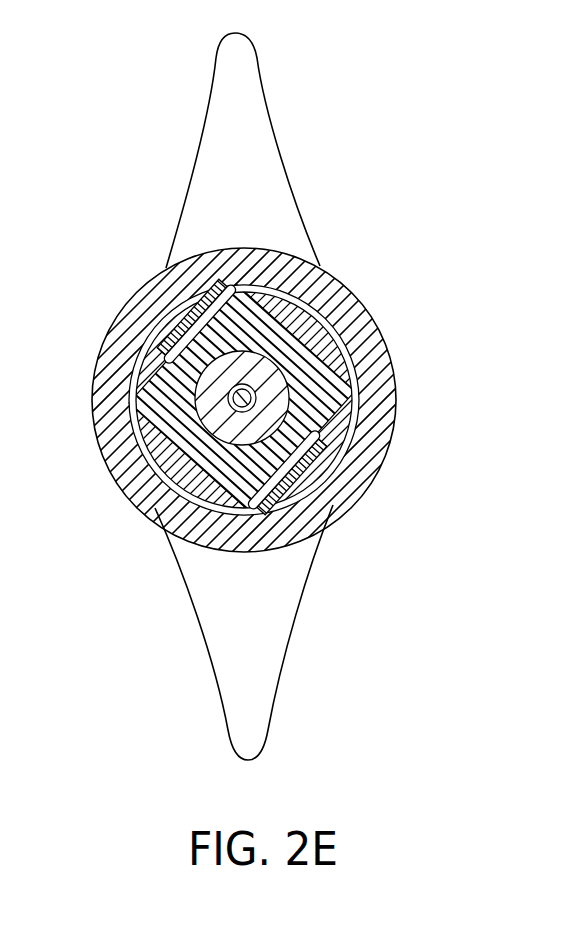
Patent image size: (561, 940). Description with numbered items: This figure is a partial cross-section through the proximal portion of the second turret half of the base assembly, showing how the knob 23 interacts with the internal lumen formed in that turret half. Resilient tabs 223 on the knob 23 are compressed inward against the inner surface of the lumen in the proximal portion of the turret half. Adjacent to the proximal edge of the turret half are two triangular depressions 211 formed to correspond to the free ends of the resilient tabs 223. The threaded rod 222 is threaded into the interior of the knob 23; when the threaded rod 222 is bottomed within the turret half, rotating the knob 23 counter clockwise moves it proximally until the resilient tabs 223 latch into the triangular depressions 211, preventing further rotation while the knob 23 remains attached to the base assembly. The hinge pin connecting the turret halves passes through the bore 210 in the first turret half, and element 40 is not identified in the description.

The knob 23 is at (248, 167).
The triangular depressions 211 is at (270, 253).
The bore 210 is at (368, 330).
The threaded rod 222 is at (213, 420).
The resilient tabs 223 is at (190, 318).
The guidewire lumen 40 is at (290, 392).